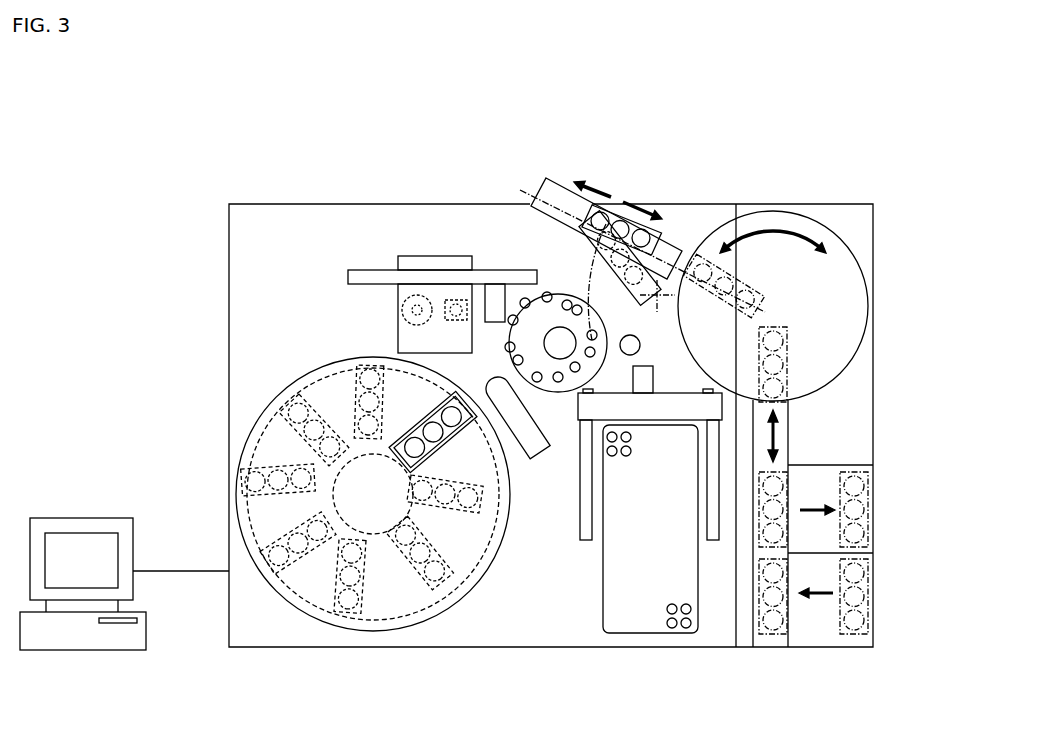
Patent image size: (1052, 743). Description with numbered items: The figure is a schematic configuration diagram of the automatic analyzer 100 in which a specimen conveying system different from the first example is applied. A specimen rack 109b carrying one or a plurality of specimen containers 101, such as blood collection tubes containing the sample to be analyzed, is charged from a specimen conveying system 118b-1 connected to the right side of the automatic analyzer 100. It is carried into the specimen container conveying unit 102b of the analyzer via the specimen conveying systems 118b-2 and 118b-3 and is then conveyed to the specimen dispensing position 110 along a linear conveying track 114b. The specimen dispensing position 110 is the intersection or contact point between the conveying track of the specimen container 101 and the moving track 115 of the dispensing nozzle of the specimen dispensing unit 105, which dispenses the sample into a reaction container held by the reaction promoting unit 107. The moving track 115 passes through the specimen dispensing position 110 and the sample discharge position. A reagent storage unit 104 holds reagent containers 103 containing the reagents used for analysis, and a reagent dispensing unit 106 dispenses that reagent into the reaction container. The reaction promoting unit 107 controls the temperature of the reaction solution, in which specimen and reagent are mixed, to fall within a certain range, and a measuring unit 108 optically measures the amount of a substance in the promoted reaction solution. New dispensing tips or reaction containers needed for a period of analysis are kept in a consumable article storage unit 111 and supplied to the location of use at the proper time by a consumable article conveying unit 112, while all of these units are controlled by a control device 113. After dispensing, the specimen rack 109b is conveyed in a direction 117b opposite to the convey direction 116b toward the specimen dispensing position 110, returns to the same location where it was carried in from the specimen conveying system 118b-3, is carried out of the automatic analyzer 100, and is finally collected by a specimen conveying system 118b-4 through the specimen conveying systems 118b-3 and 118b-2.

The automatic analyzer 100 is at (379, 170).
The specimen container 101 is at (673, 242).
The specimen container conveying unit 102b is at (693, 257).
The reagent container 103 is at (371, 595).
The reagent storage unit 104 is at (348, 637).
The specimen dispensing unit 105 is at (530, 207).
The reagent dispensing unit 106 is at (525, 433).
The reaction promoting unit 107 is at (570, 388).
The measuring unit 108 is at (407, 345).
The specimen rack 109b is at (583, 220).
The specimen dispensing position 110 is at (615, 225).
The consumable article storage unit 111 is at (693, 632).
The consumable article conveying unit 112 is at (598, 407).
The control device 113 is at (90, 652).
The linear conveying track 114b is at (524, 182).
The moving track 115 is at (582, 280).
The convey direction 116b is at (600, 188).
The opposite direction 117b is at (640, 210).
The specimen conveying system 118b-1 is at (905, 542).
The specimen conveying system 118b-2 is at (788, 432).
The specimen conveying system 118b-3 is at (852, 255).
The specimen conveying system 118b-4 is at (905, 453).